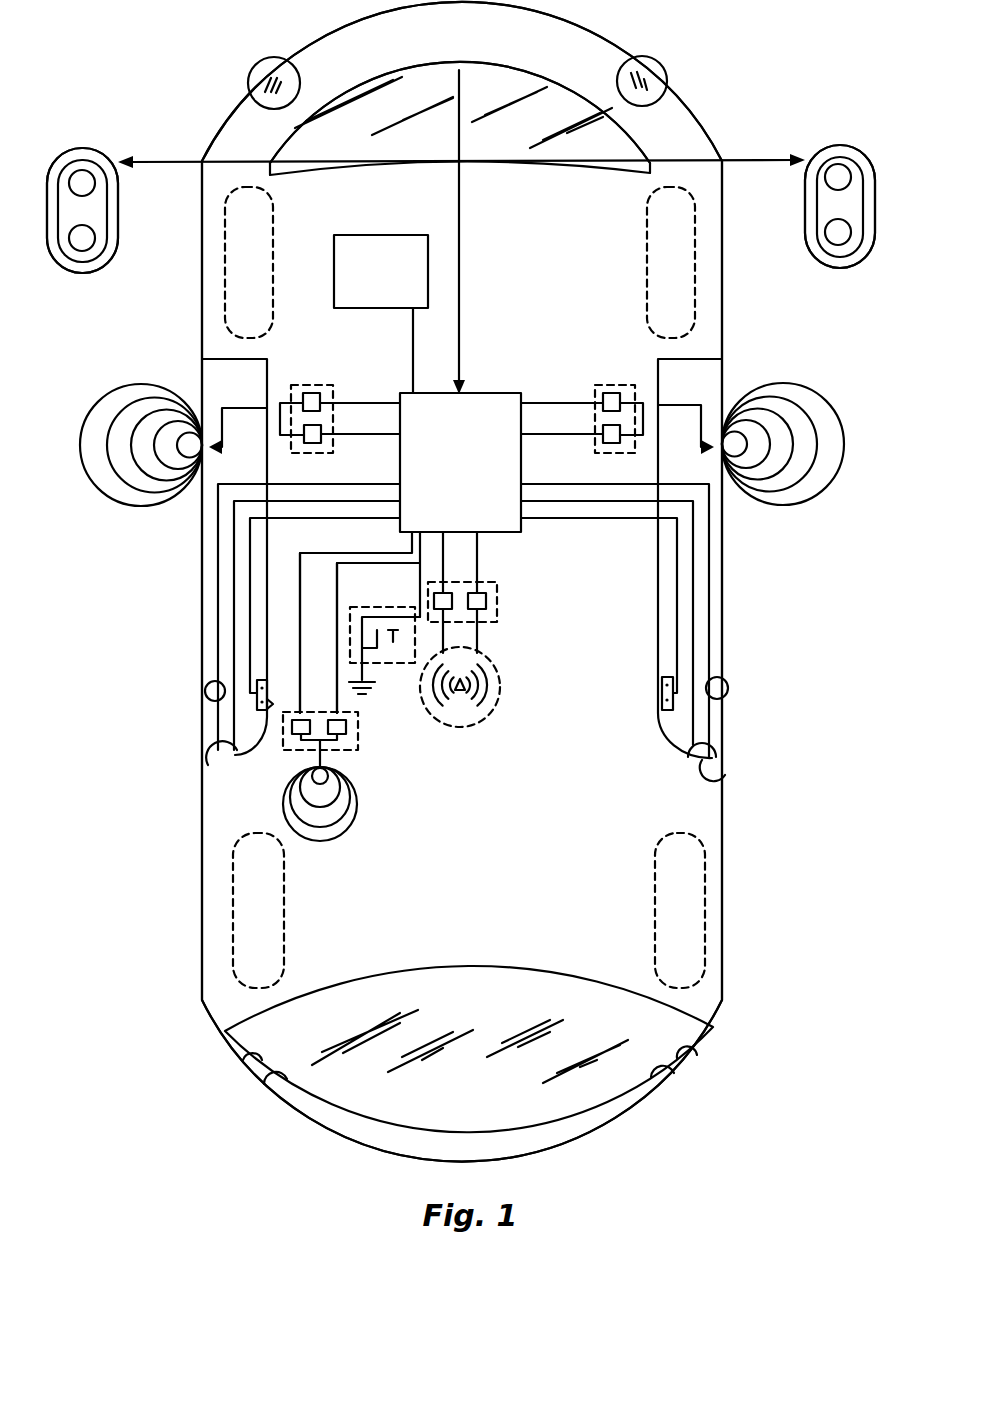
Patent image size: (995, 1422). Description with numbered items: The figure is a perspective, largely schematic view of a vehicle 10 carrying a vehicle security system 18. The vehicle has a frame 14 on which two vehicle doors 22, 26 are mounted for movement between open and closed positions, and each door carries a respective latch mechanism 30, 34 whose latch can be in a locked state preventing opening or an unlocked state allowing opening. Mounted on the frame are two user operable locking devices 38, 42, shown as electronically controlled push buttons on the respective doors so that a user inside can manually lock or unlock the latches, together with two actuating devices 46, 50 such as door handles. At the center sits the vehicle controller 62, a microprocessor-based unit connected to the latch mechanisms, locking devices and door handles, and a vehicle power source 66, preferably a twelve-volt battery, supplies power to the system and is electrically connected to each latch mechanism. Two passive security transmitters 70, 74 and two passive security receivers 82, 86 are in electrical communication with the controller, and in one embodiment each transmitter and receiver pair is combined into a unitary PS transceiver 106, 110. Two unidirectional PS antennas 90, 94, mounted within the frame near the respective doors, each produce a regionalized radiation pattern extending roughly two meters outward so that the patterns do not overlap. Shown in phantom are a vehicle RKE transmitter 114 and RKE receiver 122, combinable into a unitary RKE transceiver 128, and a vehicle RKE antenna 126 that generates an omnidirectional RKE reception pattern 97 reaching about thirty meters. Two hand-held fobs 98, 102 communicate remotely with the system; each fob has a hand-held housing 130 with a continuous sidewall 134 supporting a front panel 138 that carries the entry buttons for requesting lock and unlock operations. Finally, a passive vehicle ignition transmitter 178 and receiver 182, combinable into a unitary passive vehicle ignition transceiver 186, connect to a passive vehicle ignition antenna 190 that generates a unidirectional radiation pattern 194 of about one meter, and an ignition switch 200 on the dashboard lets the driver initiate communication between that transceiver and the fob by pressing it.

The vehicle 10 is at (142, 898).
The frame 14 is at (196, 809).
The vehicle security (VS) system 18 is at (447, 54).
The vehicle door 22 is at (273, 556).
The vehicle door 26 is at (653, 584).
The latch mechanism 30 is at (210, 752).
The latch mechanism 34 is at (722, 768).
The user operable locking device 38 is at (258, 716).
The user operable locking device 42 is at (662, 695).
The actuating device 46 is at (208, 690).
The actuating device 50 is at (722, 688).
The vehicle controller 62 is at (475, 392).
The vehicle power source 66 is at (347, 235).
The vehicle passive security (PS) transmitter 70 is at (312, 393).
The vehicle passive security (PS) transmitter 74 is at (612, 392).
The vehicle PS receiver 82 is at (312, 426).
The vehicle PS receiver 86 is at (606, 428).
The vehicle PS unidirectional antenna 90 is at (221, 456).
The vehicle PS unidirectional antenna 94 is at (712, 450).
The omnidirectional RKE reception pattern 97 is at (510, 704).
The hand-held fob 98 is at (90, 273).
The hand-held fob 102 is at (833, 268).
The unitary PS transceiver 106 is at (325, 384).
The unitary PS transceiver 110 is at (595, 388).
The vehicle RKE transmitter 114 is at (496, 597).
The vehicle RKE receiver 122 is at (452, 575).
The vehicle RKE antenna 126 is at (498, 666).
The vehicle unitary RKE transceiver 128 is at (503, 627).
The hand-held housing 130 is at (81, 138).
The continuous sidewall 134 is at (108, 252).
The front panel 138 is at (90, 160).
The passive vehicle ignition transmitter 178 is at (295, 728).
The passive vehicle ignition receiver 182 is at (358, 748).
The unitary passive vehicle ignition transceiver 186 is at (390, 746).
The passive vehicle ignition antenna 190 is at (348, 729).
The unidirectional radiation pattern 194 is at (355, 840).
The ignition switch 200 is at (374, 702).